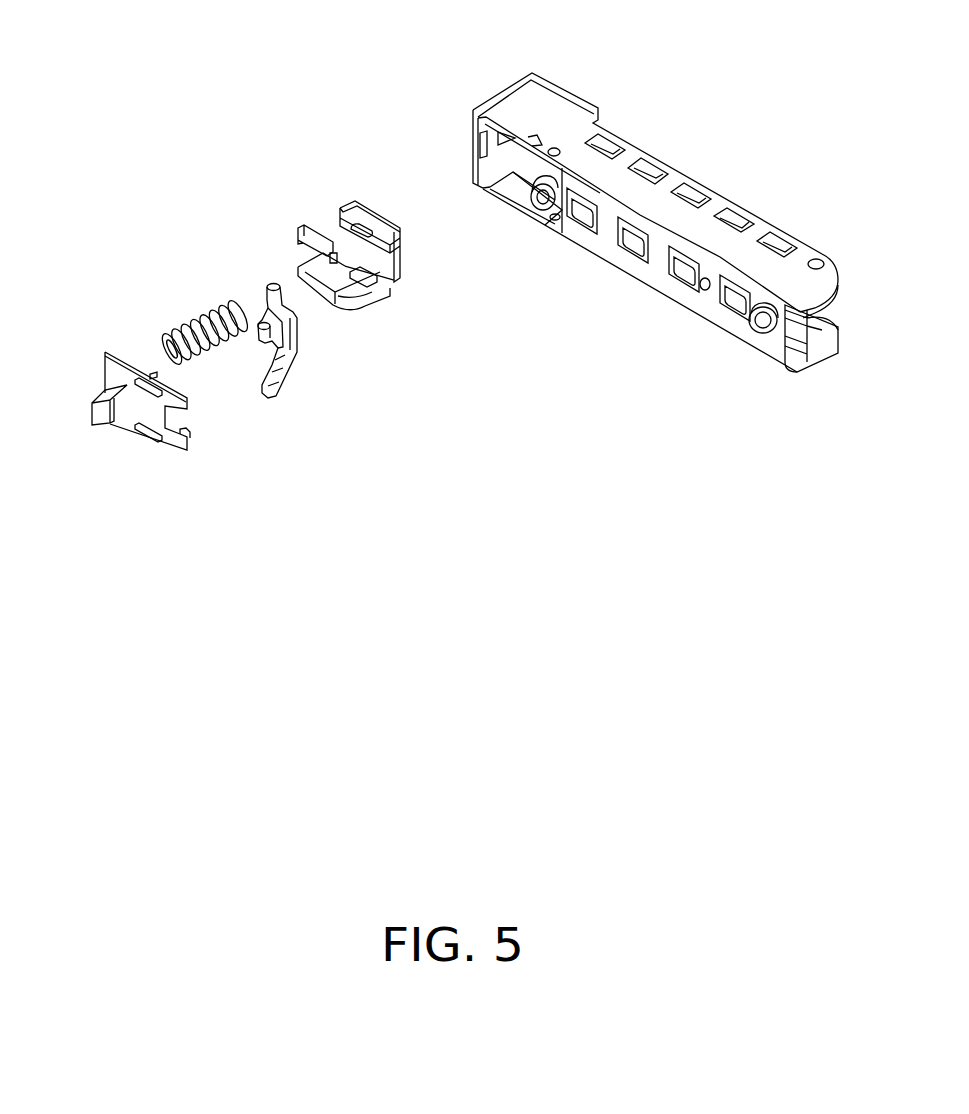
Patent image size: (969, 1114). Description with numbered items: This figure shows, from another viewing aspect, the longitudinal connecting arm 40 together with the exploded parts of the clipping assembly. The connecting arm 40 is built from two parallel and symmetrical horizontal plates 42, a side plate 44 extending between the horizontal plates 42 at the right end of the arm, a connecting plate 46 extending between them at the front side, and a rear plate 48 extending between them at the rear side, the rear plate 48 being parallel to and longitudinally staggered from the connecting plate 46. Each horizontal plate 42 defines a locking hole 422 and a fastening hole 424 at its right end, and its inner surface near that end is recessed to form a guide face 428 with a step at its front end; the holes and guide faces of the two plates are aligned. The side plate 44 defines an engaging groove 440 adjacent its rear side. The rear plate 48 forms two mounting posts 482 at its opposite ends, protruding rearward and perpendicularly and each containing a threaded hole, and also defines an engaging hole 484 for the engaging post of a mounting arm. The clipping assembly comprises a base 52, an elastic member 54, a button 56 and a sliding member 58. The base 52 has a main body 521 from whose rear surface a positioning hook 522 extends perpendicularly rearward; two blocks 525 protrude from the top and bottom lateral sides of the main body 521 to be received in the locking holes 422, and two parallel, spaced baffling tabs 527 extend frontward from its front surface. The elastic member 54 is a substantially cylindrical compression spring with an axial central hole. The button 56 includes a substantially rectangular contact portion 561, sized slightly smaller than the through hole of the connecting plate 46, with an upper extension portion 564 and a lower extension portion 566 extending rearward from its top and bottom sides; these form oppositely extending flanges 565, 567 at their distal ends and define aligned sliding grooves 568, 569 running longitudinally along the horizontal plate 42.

The connecting arm 40 is at (618, 225).
The horizontal plates 42 is at (720, 205).
The side plate 44 is at (475, 118).
The connecting plate 46 is at (547, 82).
The rear plate 48 is at (627, 265).
The locking hole 422 is at (535, 137).
The fastening hole 424 is at (557, 148).
The guide face 428 is at (513, 186).
The engaging groove 440 is at (480, 145).
The mounting posts 482 is at (540, 223).
The engaging hole 484 is at (703, 288).
The base 52 is at (143, 396).
The main body 521 is at (107, 378).
The positioning hook 522 is at (103, 420).
The blocks 525 is at (152, 374).
The baffling tabs 527 is at (190, 433).
The elastic member 54 is at (198, 320).
The button 56 is at (337, 265).
The contact portion 561 is at (372, 215).
The upper extension portion 564 is at (330, 225).
The flange 565 is at (310, 240).
The lower extension portion 566 is at (355, 302).
The flange 567 is at (320, 305).
The sliding groove 568 is at (348, 205).
The sliding groove 569 is at (380, 282).
The sliding member 58 is at (290, 393).